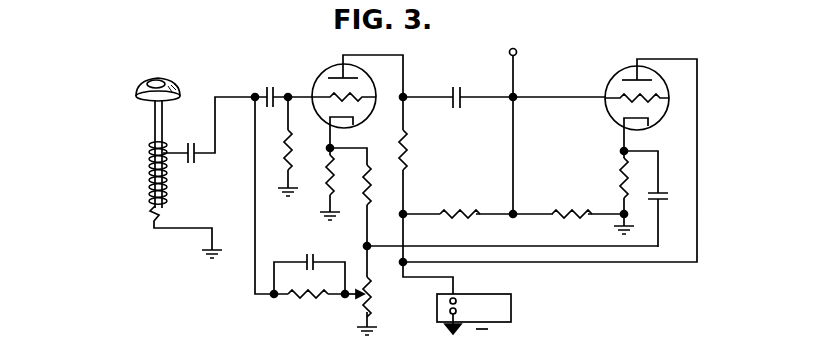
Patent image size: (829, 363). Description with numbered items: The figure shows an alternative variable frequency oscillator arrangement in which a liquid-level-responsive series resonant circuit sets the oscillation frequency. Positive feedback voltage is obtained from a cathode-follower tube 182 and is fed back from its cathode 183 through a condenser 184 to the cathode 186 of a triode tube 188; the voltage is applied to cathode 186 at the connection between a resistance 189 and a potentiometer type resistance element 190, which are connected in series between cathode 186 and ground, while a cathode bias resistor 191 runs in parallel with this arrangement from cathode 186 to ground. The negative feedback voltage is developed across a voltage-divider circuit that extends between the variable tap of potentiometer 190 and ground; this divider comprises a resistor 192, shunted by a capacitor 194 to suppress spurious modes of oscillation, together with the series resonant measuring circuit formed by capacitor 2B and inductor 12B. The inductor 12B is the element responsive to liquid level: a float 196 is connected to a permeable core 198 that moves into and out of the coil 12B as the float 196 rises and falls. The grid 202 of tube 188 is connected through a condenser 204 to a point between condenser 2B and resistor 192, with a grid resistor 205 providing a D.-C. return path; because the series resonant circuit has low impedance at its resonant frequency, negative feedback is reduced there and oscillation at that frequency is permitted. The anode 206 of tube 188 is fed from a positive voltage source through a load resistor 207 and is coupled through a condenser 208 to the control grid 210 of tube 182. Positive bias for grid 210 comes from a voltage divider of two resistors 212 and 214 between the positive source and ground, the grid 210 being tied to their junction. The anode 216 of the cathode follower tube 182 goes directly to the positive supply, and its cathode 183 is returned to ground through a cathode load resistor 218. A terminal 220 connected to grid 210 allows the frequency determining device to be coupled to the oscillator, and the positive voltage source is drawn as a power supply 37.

The float 196 is at (138, 88).
The permeable core 198 is at (155, 127).
The inductor 12B is at (150, 178).
The capacitor 2B is at (196, 155).
The condenser 204 is at (278, 77).
The grid resistor 205 is at (285, 158).
The triode tube 188 is at (338, 64).
The anode 206 is at (330, 77).
The grid 202 is at (356, 94).
The cathode 186 is at (350, 120).
The cathode bias resistor 191 is at (323, 190).
The resistance 189 is at (368, 196).
The capacitor 194 is at (311, 252).
The resistor 192 is at (313, 299).
The potentiometer type resistance element 190 is at (373, 302).
The load resistor 207 is at (408, 143).
The condenser 208 is at (458, 86).
The resistor 212 is at (460, 209).
The resistor 214 is at (590, 195).
The terminal 220 is at (517, 50).
The cathode-follower tube 182 is at (612, 82).
The anode 216 is at (631, 76).
The control grid 210 is at (628, 96).
The cathode 183 is at (645, 118).
The cathode load resistor 218 is at (617, 180).
The condenser 184 is at (669, 194).
The power supply 37 is at (512, 308).